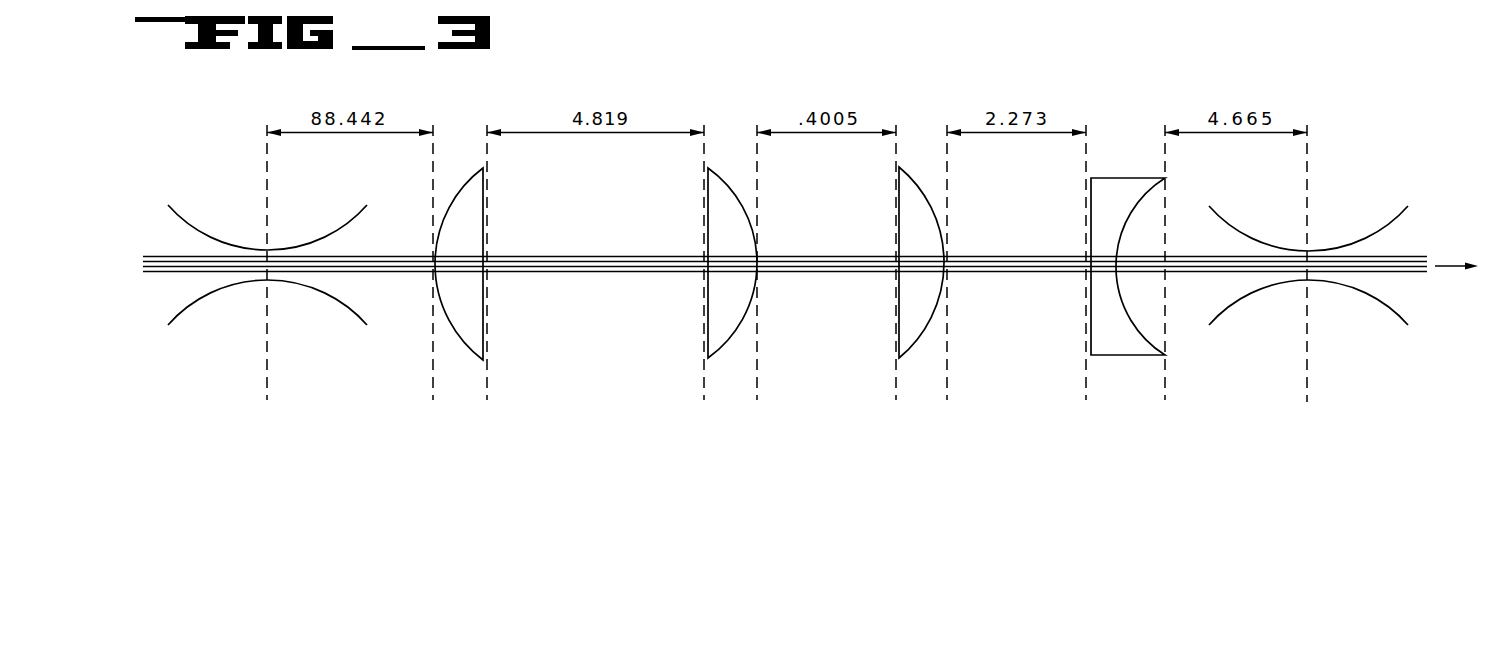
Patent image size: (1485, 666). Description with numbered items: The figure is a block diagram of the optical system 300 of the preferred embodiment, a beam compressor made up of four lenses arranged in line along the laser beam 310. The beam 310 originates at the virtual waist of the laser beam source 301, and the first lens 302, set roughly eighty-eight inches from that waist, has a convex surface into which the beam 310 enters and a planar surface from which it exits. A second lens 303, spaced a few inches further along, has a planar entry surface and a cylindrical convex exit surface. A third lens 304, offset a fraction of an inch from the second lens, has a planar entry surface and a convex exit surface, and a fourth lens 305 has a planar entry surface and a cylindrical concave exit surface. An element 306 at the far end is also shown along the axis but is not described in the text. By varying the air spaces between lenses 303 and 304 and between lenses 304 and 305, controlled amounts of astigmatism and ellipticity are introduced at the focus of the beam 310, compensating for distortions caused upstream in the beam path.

The optical system 300 is at (462, 128).
The laser beam source virtual waist 301 is at (260, 406).
The lens 302 is at (462, 397).
The second lens 303 is at (732, 393).
The third lens 304 is at (923, 393).
The fourth lens 305 is at (1125, 393).
The sixth lens (biconcave) 306 is at (1300, 398).
The beam 310 is at (1423, 248).